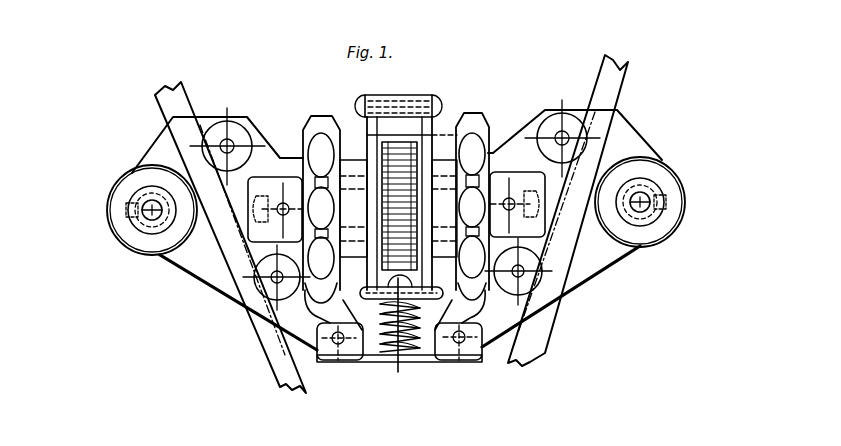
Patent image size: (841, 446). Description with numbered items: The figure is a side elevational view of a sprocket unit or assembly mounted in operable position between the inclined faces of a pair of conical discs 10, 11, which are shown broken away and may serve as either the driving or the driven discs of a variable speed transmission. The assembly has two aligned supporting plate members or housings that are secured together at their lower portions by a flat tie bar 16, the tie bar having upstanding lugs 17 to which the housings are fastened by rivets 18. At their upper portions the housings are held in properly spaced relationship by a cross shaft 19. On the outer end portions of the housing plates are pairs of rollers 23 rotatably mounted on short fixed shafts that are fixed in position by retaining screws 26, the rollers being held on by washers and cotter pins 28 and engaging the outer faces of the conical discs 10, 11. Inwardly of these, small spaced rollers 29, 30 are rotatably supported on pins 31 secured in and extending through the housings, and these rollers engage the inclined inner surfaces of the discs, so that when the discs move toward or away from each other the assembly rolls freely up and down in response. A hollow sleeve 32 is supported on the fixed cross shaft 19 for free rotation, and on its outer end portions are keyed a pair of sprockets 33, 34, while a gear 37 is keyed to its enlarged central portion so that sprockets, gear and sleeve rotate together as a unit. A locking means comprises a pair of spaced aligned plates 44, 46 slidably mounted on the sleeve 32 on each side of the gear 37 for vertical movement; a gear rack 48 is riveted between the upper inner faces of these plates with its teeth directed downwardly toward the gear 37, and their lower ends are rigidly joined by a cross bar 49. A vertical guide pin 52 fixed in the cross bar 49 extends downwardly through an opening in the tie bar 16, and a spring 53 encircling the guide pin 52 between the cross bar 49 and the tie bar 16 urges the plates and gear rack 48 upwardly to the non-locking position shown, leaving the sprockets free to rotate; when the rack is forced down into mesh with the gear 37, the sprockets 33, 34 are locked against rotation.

The conical disc 10 is at (170, 99).
The conical disc 11 is at (620, 76).
The flat tie bar 16 is at (355, 362).
The upstanding lug 17 is at (318, 337).
The rivet 18 is at (337, 346).
The cross shaft 19 is at (352, 195).
The roller 23 is at (135, 183).
The retaining screw 26 is at (126, 210).
The cotter pin 28 is at (143, 225).
The roller 29 is at (245, 140).
The roller 30 is at (258, 263).
The pin 31 is at (237, 128).
The sleeve 32 is at (420, 20).
The sprocket 33 is at (318, 117).
The sprocket 34 is at (480, 124).
The gear 37 is at (405, 142).
The plate 44 is at (360, 108).
The plate 46 is at (472, 118).
The gear rack 48 is at (409, 97).
The cross bar 49 is at (374, 276).
The vertical guide pin 52 is at (393, 362).
The spring 53 is at (405, 352).